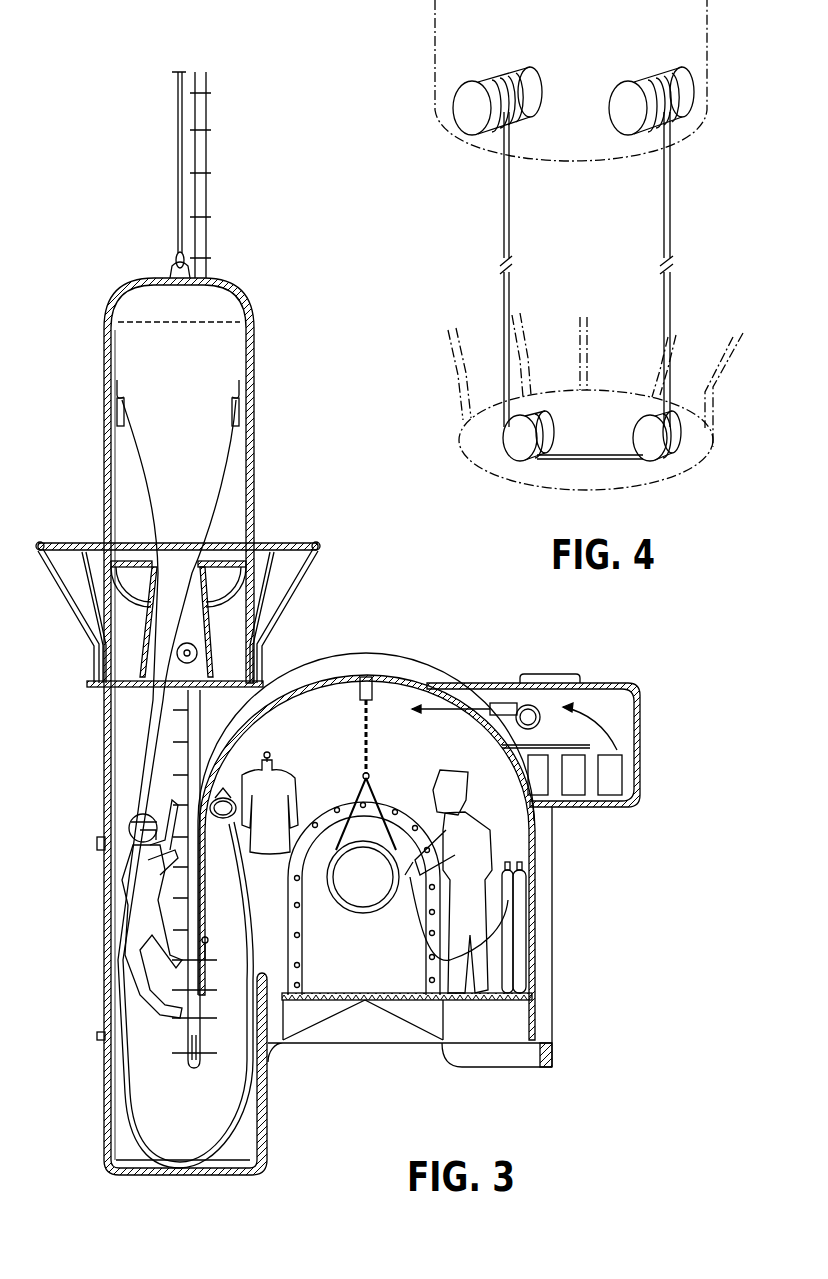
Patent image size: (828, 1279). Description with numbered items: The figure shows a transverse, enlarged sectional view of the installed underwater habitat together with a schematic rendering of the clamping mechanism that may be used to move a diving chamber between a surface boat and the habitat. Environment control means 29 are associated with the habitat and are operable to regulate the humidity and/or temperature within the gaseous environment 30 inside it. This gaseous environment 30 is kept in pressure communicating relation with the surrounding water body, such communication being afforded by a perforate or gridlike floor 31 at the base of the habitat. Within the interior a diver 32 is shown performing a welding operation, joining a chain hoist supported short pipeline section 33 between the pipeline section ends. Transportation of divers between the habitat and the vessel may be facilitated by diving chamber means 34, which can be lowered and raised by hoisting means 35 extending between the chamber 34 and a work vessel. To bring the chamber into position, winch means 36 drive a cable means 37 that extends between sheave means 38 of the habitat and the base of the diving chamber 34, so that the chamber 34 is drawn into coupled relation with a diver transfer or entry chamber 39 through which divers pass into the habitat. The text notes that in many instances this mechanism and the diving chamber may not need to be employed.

In FIG. 3, the environment control means 29 is at (627, 735).
In FIG. 3, the gaseous environment 30 is at (398, 864).
In FIG. 3, the perforate or gridlike floor 31 is at (390, 1000).
In FIG. 3, the diver 32 is at (518, 895).
In FIG. 3, the short pipeline section 33 is at (330, 847).
In FIG. 3, the diving chamber means 34 is at (250, 337).
In FIG. 3, the hoisting means 35 is at (178, 115).
In FIG. 4, the winch means 36 is at (623, 100).
In FIG. 4, the cable means 37 is at (670, 209).
In FIG. 4, the sheave means 38 is at (645, 442).
In FIG. 3, the diver transfer or entry chamber 39 is at (110, 737).